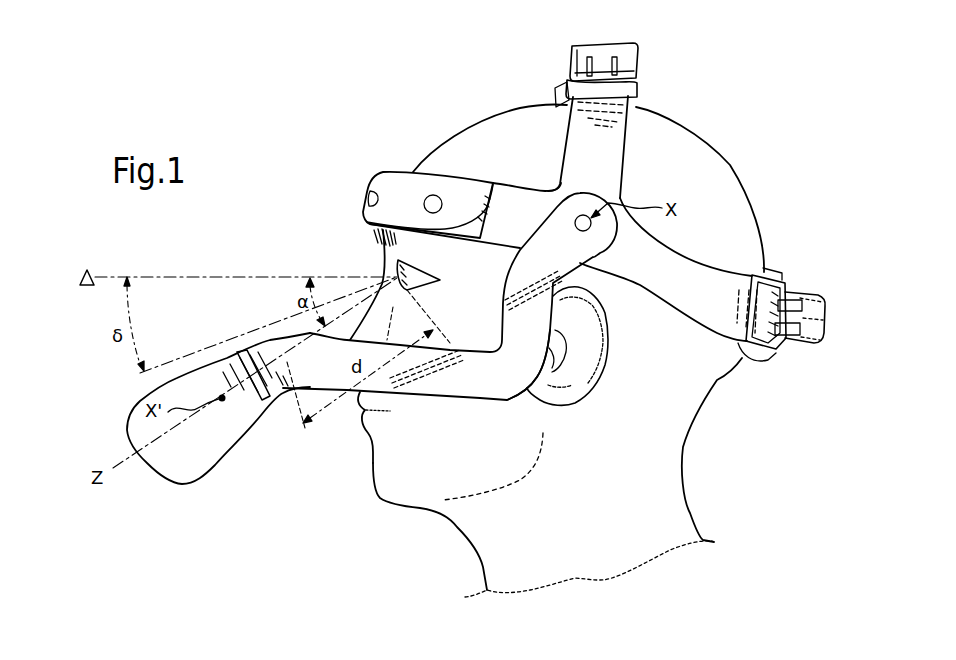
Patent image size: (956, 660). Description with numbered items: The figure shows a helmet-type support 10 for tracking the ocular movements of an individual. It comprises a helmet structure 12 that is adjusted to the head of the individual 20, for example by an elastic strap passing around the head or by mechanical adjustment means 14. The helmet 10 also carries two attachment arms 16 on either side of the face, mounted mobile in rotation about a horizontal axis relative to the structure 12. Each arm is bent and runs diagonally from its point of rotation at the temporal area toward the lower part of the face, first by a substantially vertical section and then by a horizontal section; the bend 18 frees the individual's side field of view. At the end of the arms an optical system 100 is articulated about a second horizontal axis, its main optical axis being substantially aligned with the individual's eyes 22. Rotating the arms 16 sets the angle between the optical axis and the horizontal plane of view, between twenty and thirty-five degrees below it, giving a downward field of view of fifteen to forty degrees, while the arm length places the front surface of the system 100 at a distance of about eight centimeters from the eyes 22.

The helmet-type support 10 is at (337, 152).
The helmet structure 12 is at (608, 133).
The mechanical adjustment means 14 is at (610, 44).
The attachment arms 16 is at (459, 393).
The bend 18 is at (531, 387).
The head of an individual 20 is at (707, 142).
The eyes 22 is at (385, 266).
The optical system 100 is at (204, 454).